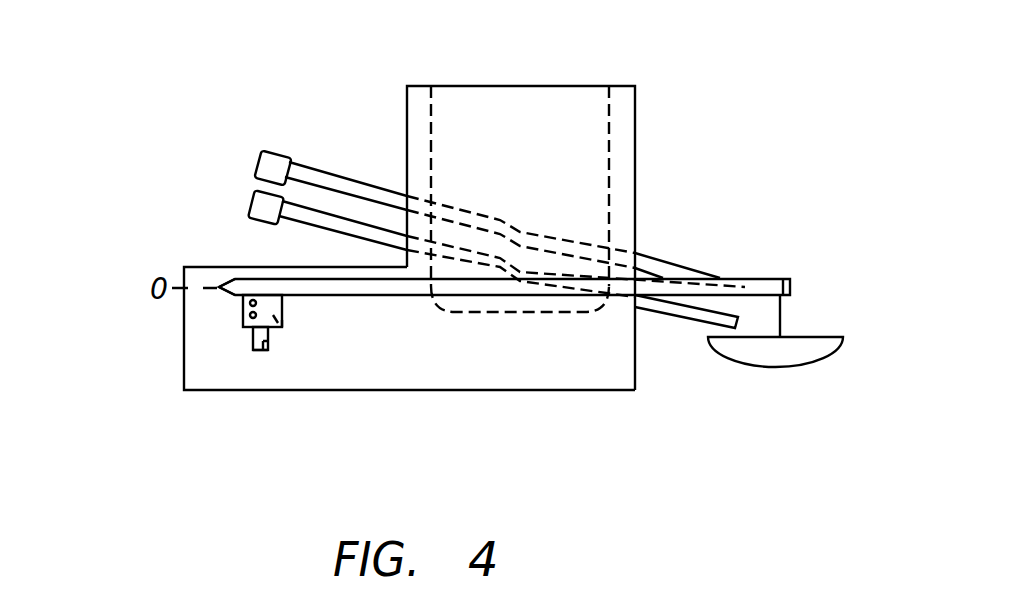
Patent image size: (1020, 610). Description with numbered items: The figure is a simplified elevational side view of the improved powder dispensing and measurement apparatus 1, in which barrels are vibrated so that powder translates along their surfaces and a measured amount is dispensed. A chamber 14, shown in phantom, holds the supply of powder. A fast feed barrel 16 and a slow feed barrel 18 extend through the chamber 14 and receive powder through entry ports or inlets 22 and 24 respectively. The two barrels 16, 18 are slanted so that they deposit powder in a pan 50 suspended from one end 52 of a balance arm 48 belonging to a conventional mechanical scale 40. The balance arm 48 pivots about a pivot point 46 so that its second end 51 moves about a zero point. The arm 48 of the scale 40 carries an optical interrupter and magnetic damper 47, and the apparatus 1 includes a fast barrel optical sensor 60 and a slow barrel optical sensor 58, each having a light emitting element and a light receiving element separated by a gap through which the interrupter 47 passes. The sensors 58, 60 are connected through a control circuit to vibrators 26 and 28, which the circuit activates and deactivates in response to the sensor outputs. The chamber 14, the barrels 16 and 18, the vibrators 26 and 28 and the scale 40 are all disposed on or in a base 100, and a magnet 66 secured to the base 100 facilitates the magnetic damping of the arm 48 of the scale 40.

The apparatus 1 is at (223, 113).
The chamber 14 is at (583, 145).
The fast feed barrel 16 is at (368, 192).
The slow feed barrel 18 is at (328, 220).
The entry port or inlet 22 is at (536, 232).
The entry port or inlet 24 is at (538, 270).
The vibrator 26 is at (258, 170).
The vibrator 28 is at (252, 200).
The mechanical scale 40 is at (795, 273).
The pivot point 46 is at (562, 294).
The optical interrupter and magnetic damper 47 is at (280, 328).
The balance arm 48 is at (480, 288).
The pan 50 is at (810, 350).
The second end 51 is at (237, 277).
The end 52 is at (792, 283).
The slow barrel optical sensor 58 is at (243, 302).
The fast barrel optical sensor 60 is at (243, 316).
The magnet 66 is at (258, 348).
The base 100 is at (372, 370).